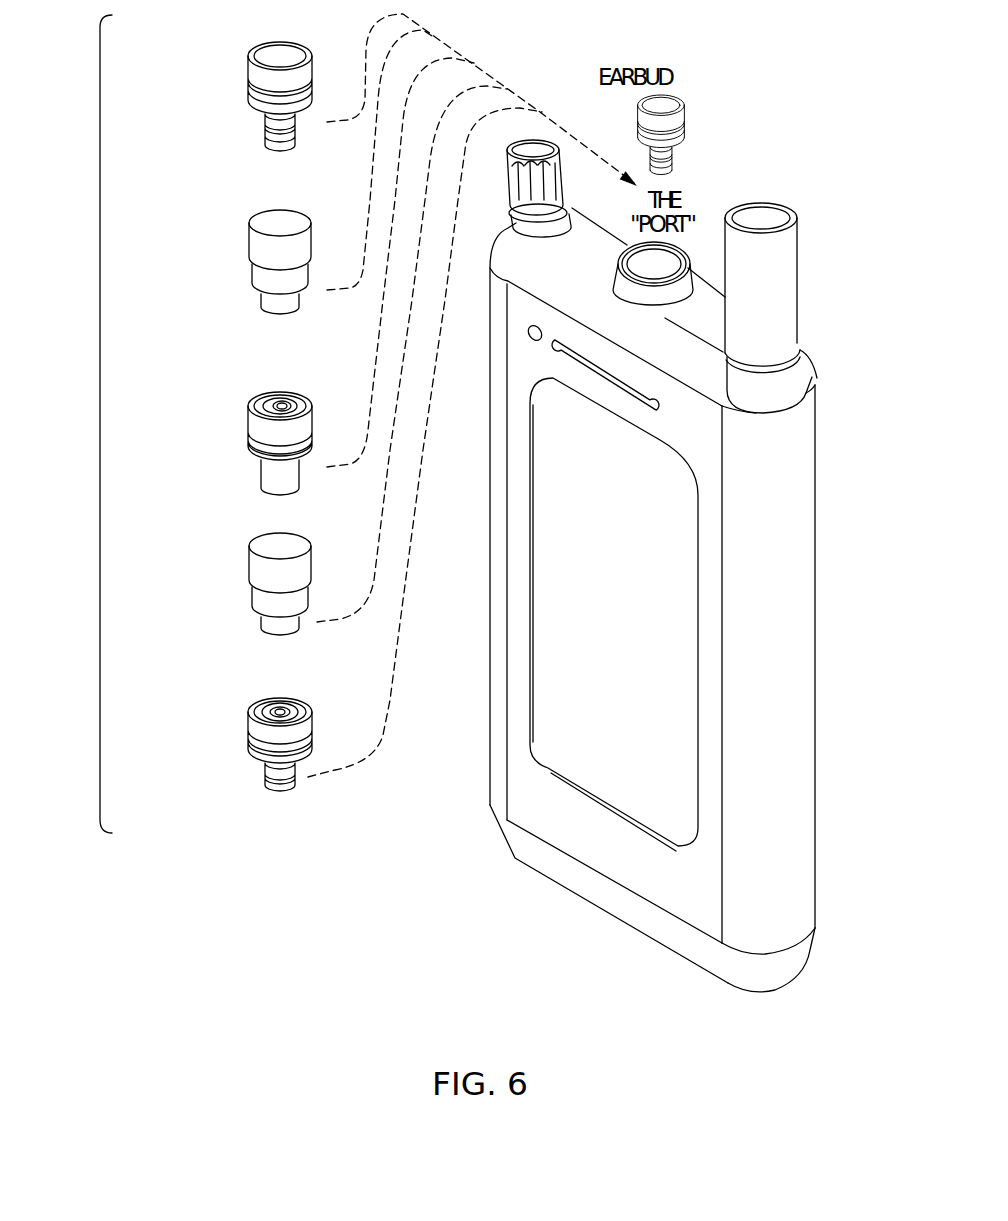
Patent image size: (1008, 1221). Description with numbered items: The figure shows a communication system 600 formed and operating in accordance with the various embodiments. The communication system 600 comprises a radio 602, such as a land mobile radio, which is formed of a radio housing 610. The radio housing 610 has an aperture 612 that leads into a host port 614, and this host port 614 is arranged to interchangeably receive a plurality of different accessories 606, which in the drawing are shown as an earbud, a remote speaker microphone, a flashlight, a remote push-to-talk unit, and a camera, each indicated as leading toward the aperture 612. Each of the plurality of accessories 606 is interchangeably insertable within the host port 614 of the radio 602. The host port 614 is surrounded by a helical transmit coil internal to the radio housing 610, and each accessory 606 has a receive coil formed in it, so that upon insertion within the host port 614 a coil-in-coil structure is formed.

The communication system 600 is at (801, 1042).
The radio 602 is at (815, 663).
The accessories 606 is at (100, 418).
The radio housing 610 is at (808, 513).
The aperture 612 is at (618, 246).
The host port 614 is at (670, 298).